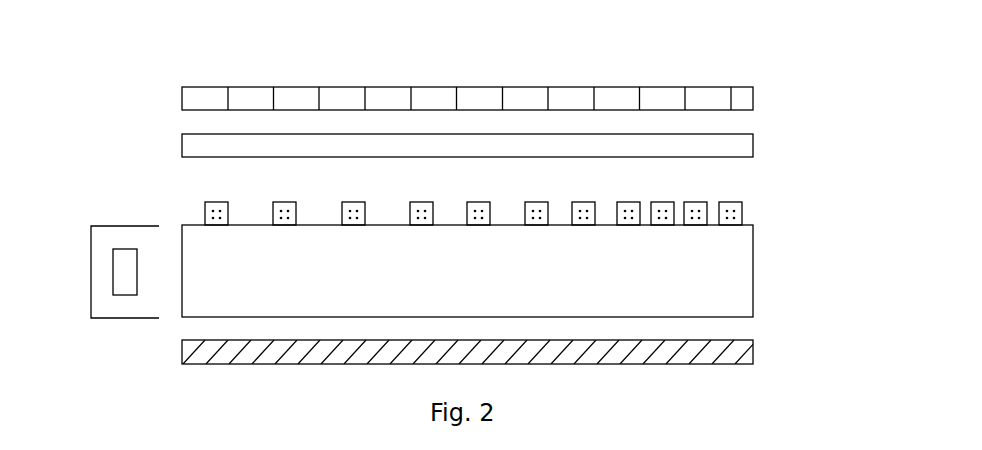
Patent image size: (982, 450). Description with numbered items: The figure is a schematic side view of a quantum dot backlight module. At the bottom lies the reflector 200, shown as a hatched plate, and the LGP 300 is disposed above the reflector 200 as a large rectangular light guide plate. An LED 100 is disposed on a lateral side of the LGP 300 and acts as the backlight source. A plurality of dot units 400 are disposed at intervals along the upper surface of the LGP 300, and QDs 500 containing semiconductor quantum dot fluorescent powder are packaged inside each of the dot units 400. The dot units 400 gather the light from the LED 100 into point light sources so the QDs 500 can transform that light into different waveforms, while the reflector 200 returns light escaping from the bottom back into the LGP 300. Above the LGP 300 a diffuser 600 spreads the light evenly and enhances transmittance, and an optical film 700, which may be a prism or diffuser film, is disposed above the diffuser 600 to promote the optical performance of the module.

The LED 100 is at (113, 226).
The reflector 200 is at (753, 362).
The LGP 300 is at (753, 280).
The dot units 400 is at (742, 214).
The QDs 500 is at (732, 203).
The diffuser 600 is at (753, 136).
The optical film 700 is at (740, 86).